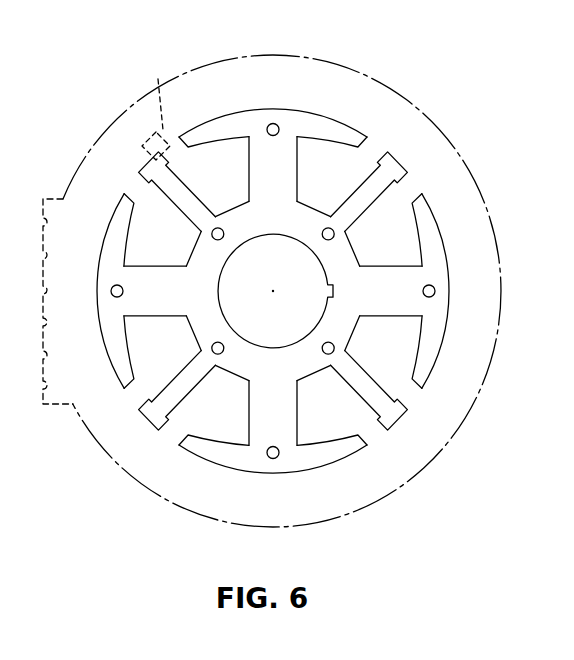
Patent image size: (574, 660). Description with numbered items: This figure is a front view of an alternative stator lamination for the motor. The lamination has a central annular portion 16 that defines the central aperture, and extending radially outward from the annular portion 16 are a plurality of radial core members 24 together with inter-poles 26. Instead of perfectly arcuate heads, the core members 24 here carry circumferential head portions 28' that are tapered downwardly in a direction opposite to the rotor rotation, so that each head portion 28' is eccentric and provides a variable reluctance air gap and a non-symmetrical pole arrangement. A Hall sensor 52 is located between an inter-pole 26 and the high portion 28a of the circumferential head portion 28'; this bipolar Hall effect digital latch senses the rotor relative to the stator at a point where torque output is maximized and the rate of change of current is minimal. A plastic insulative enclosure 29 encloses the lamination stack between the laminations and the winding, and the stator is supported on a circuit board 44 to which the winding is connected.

The central annular portion 16 is at (318, 205).
The radial core member 24 is at (296, 171).
The inter-pole 26 is at (145, 162).
The head portion 28' is at (297, 277).
The high portion 28a is at (193, 128).
The plastic insulative enclosure 29 is at (288, 122).
The circuit board 44 is at (480, 181).
The Hall sensor 52 is at (157, 79).